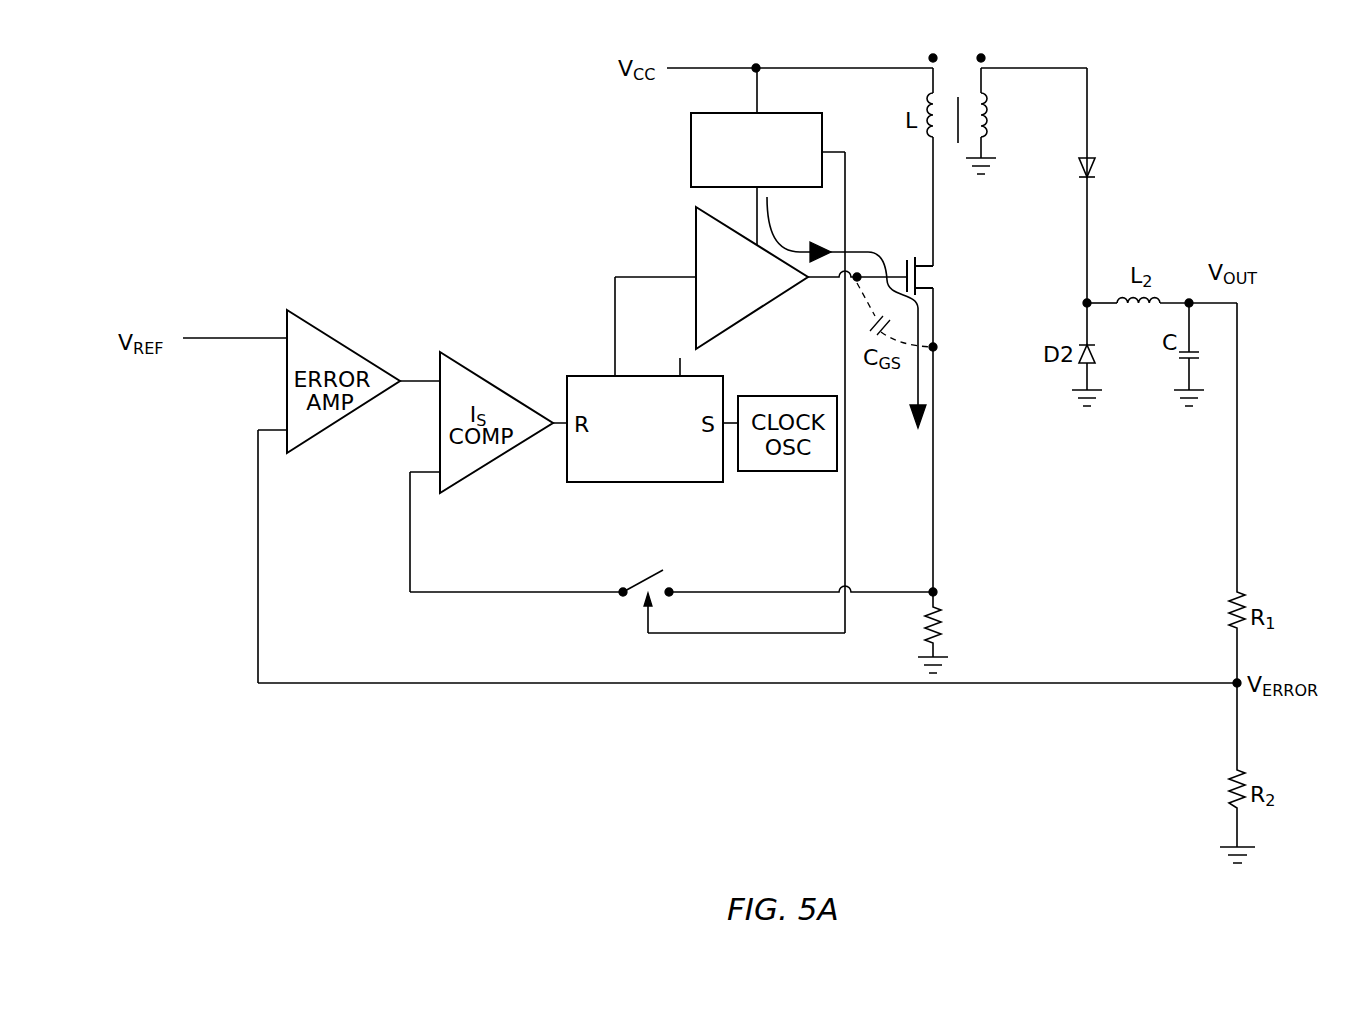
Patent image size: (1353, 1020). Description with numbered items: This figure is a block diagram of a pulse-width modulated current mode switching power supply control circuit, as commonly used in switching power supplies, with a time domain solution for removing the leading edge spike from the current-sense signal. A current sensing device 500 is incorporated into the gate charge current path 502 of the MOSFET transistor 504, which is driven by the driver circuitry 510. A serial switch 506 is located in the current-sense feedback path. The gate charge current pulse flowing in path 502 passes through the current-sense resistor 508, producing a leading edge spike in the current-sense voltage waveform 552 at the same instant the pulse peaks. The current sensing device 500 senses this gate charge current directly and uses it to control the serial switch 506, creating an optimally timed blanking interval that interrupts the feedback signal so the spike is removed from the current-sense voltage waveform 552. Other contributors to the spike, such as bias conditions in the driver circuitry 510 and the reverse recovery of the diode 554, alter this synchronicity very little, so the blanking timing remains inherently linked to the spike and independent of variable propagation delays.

The current sensing device 500 is at (691, 152).
The gate charge current path 502 is at (883, 256).
The MOSFET transistor 504 is at (936, 278).
The serial switch 506 is at (632, 603).
The current-sense resistor 508 is at (1020, 655).
The driver circuitry 510 is at (696, 243).
The current-sense voltage waveform 552 is at (1020, 598).
The diode D1 554 is at (1137, 172).